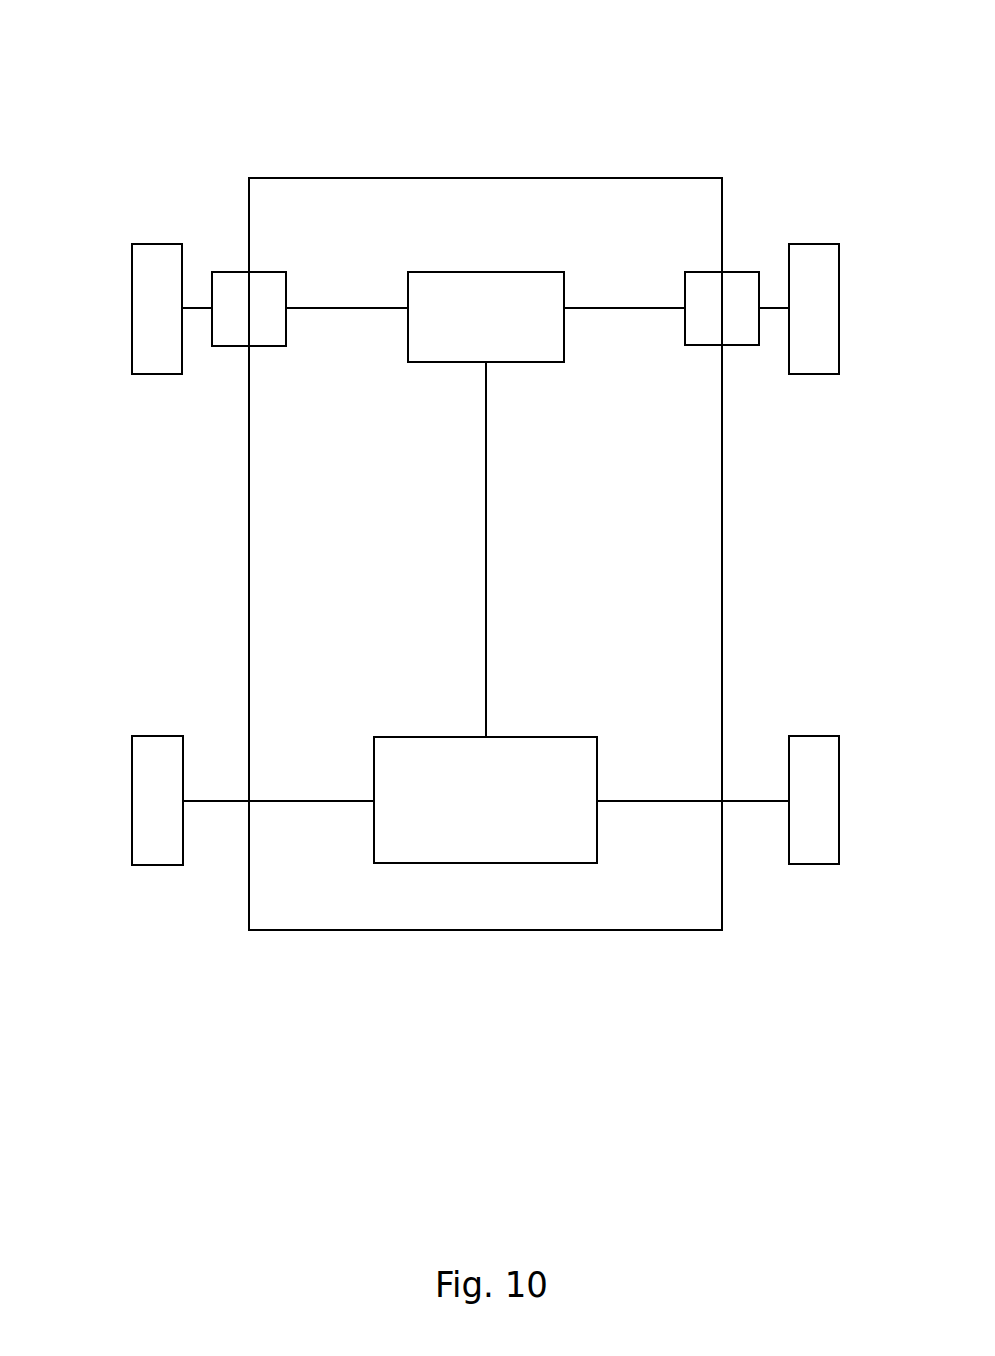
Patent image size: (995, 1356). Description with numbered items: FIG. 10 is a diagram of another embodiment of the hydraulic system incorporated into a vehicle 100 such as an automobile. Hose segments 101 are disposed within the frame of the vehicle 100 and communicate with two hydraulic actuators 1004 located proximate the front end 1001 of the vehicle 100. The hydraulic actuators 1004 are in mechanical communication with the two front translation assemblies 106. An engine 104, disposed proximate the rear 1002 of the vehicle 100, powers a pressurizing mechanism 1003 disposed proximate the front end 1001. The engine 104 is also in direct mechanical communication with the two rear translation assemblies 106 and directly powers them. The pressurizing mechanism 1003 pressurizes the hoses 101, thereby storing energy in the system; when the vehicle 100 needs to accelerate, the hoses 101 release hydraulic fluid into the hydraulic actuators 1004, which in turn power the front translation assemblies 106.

The vehicle 100 is at (44, 17).
The hose segments 101 is at (722, 583).
The engine 104 is at (580, 845).
The translation assemblies 106 is at (157, 276).
The front end 1001 is at (489, 146).
The rear 1002 is at (455, 954).
The pressurizing mechanism 1003 is at (540, 290).
The hydraulic actuators 1004 is at (233, 288).